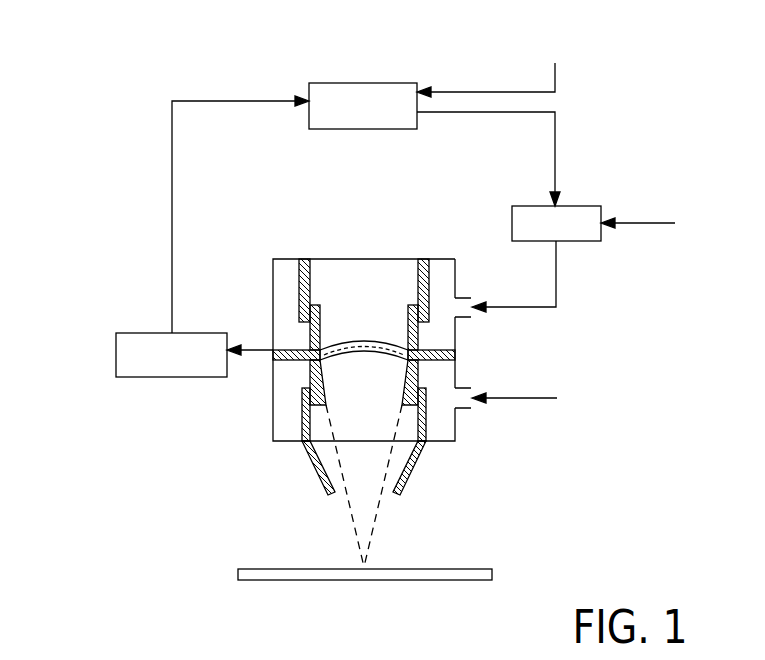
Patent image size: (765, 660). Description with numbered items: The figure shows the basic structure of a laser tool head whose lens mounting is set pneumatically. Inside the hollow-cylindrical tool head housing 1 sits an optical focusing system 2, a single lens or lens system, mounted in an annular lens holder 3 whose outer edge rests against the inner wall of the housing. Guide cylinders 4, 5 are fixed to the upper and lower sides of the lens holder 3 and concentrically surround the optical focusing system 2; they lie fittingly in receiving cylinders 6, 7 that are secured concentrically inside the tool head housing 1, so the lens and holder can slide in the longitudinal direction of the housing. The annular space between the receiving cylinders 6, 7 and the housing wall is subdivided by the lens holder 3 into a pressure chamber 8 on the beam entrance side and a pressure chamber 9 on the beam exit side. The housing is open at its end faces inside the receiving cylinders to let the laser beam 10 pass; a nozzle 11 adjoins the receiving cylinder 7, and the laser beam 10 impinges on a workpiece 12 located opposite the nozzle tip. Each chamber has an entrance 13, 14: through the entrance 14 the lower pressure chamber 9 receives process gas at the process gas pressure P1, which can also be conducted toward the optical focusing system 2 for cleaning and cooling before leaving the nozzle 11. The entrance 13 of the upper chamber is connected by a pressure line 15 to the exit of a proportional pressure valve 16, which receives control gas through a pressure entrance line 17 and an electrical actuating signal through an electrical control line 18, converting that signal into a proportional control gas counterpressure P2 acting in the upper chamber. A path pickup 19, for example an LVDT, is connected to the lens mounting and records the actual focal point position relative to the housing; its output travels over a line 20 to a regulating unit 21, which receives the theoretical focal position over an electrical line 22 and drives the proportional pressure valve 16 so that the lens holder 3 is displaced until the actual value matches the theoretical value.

The tool head housing 1 is at (280, 285).
The optical focusing system 2 is at (360, 342).
The lens holder 3 is at (455, 360).
The guide cylinder 4 is at (407, 320).
The guide cylinder 5 is at (300, 375).
The receiving cylinder 6 is at (425, 297).
The receiving cylinder 7 is at (433, 425).
The pressure chamber 8 is at (285, 322).
The pressure chamber 9 is at (277, 417).
The laser beam 10 is at (375, 517).
The nozzle 11 is at (320, 468).
The workpiece 12 is at (238, 572).
The entrance 13 is at (460, 307).
The entrance 14 is at (462, 398).
The pressure line 15 is at (557, 289).
The proportional pressure valve 16 is at (582, 218).
The pressure entrance line 17 is at (652, 223).
The electrical control line 18 is at (555, 132).
The path pickup 19 is at (125, 352).
The line 20 is at (172, 193).
The regulating unit 21 is at (347, 83).
The electrical line 22 is at (490, 92).
The process gas pressure P1 is at (433, 377).
The control gas counterpressure P2 is at (434, 339).